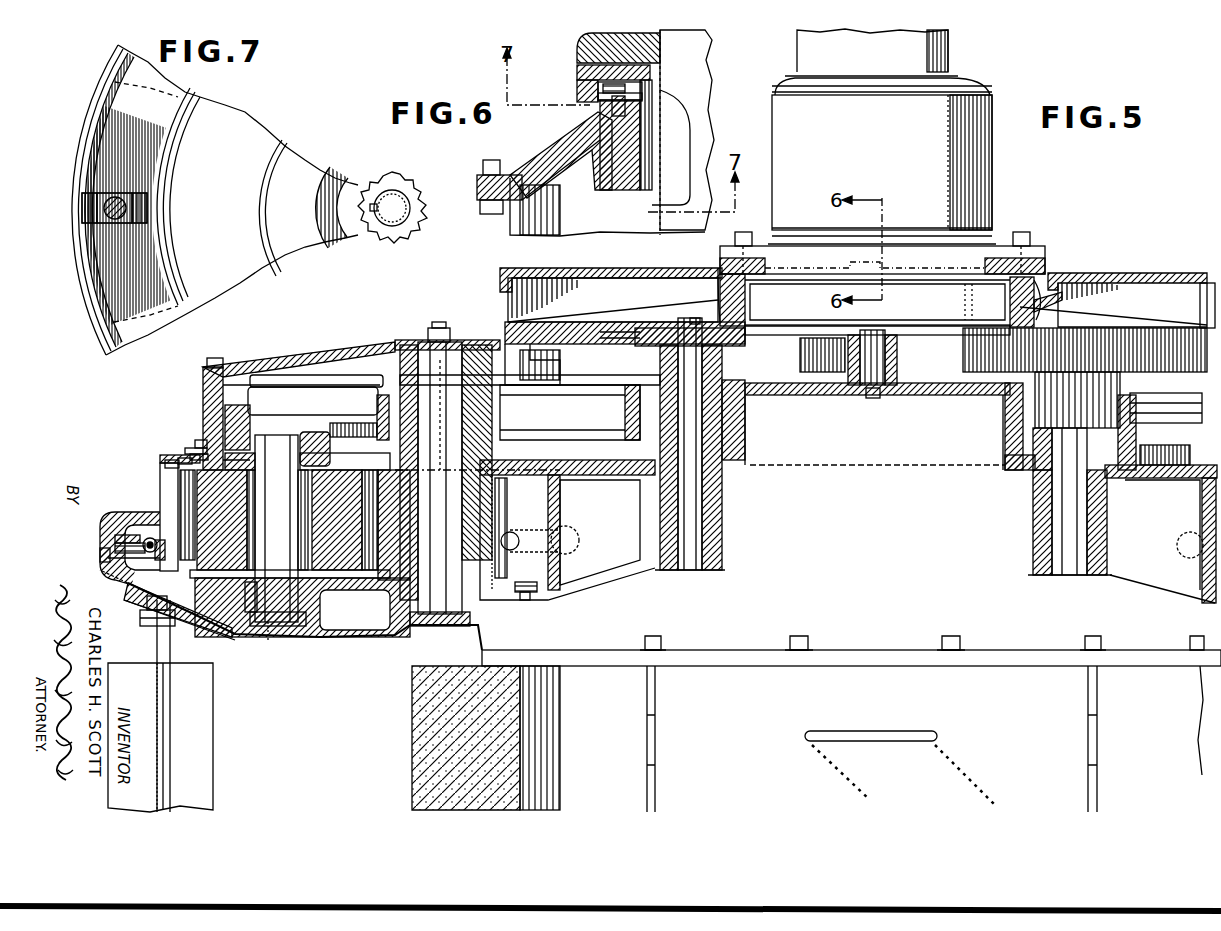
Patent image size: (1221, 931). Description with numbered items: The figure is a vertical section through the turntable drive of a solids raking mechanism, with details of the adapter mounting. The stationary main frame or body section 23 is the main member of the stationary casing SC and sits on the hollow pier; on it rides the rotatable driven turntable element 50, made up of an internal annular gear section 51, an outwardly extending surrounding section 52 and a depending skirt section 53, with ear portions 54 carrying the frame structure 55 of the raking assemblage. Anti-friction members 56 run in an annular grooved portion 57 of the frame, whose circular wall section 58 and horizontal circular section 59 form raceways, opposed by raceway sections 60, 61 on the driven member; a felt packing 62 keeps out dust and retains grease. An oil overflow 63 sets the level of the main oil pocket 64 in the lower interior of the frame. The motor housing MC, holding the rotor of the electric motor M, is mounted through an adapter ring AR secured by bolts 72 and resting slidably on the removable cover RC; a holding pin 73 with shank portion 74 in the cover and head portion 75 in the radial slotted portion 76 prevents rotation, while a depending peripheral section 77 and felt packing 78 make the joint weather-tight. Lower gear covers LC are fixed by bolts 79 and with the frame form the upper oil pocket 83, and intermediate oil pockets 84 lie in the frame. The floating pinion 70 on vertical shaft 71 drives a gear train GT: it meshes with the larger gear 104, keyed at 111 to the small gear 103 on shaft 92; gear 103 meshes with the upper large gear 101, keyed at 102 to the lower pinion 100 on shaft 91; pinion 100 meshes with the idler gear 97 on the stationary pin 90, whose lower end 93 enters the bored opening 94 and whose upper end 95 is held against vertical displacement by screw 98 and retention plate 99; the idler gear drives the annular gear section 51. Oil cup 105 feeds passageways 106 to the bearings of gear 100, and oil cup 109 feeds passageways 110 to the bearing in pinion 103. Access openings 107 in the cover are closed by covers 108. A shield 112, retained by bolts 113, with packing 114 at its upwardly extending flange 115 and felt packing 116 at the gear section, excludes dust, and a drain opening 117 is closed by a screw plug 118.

In FIG. 5, the stationary main frame member or body section 23 is at (315, 630).
In FIG. 5, the rotatable driven turntable element 50 is at (162, 480).
In FIG. 5, the internal annular gear section 51 is at (162, 458).
In FIG. 5, the surrounding section 52 is at (128, 543).
In FIG. 5, the skirt section 53 is at (108, 535).
In FIG. 5, the ear portions 54 is at (140, 620).
In FIG. 5, the frame structure 55 is at (205, 715).
In FIG. 5, the anti-friction members 56 is at (165, 552).
In FIG. 5, the annular grooved or recessed portion 57 is at (108, 558).
In FIG. 5, the circular wall section 58 is at (100, 552).
In FIG. 5, the horizontal circular section 59 is at (125, 578).
In FIG. 5, the raceway section 60 is at (150, 538).
In FIG. 5, the raceway section 61 is at (154, 540).
In FIG. 5, the felt packing 62 is at (125, 535).
In FIG. 5, the oil overflow 63 is at (572, 548).
In FIG. 5, the main oil pocket 64 is at (525, 565).
In FIG. 5, the floating pinion or gear element 70 is at (895, 385).
In FIG. 5, the vertically extending shaft 71 is at (870, 385).
In FIG. 5, the bolts 72 is at (745, 232).
In FIG. 6, the holding pin 73 is at (614, 110).
In FIG. 6, the shank portion 74 is at (565, 170).
In FIG. 7, the head portion 75 is at (128, 205).
In FIG. 6, the head portion 75 is at (605, 98).
In FIG. 7, the radial slotted portion 76 is at (150, 190).
In FIG. 6, the radial slotted portion 76 is at (603, 88).
In FIG. 5, the radial slotted portion 76 is at (885, 262).
In FIG. 7, the depending peripheral section 77 is at (95, 180).
In FIG. 5, the depending peripheral section 77 is at (720, 278).
In FIG. 5, the felt packing 78 is at (1040, 275).
In FIG. 5, the bolts 79 is at (224, 352).
In FIG. 5, the upper oil pocket 83 is at (535, 362).
In FIG. 5, the intermediate oil pockets 84 is at (1150, 440).
In FIG. 5, the idler gear bearing pin or stationary shaft 90 is at (278, 530).
In FIG. 5, the first intermediate gear set bearing pin or shaft 91 is at (440, 484).
In FIG. 5, the second intermediate gear set bearing pin or shaft 92 is at (690, 457).
In FIG. 5, the lower end of pin 90 93 is at (274, 630).
In FIG. 5, the bored opening 94 is at (255, 630).
In FIG. 5, the upper end of pin 90 95 is at (278, 440).
In FIG. 5, the idler gear 97 is at (290, 524).
In FIG. 5, the screw 98 is at (304, 430).
In FIG. 5, the retention plate 99 is at (335, 428).
In FIG. 5, the lower pinion or small gear 100 is at (390, 620).
In FIG. 5, the upper large gear 101 is at (505, 410).
In FIG. 5, the key 102 is at (316, 376).
In FIG. 5, the lower pinion or small gear 103 is at (745, 436).
In FIG. 5, the larger gear 104 is at (730, 336).
In FIG. 5, the oil cup 105 is at (442, 324).
In FIG. 5, the oil passageways 106 is at (440, 400).
In FIG. 5, the access openings 107 is at (857, 302).
In FIG. 5, the covers 108 is at (612, 272).
In FIG. 5, the oil cup 109 is at (695, 318).
In FIG. 5, the oil passageways 110 is at (686, 345).
In FIG. 5, the key 111 is at (640, 345).
In FIG. 5, the shield 112 is at (183, 458).
In FIG. 5, the bolts 113 is at (195, 454).
In FIG. 5, the packing 114 is at (200, 440).
In FIG. 5, the upwardly extending flange portion 115 is at (195, 448).
In FIG. 5, the felt packing 116 is at (170, 462).
In FIG. 5, the oil drain opening 117 is at (518, 594).
In FIG. 5, the screw plug 118 is at (527, 600).
In FIG. 7, the adapter ring AR is at (95, 142).
In FIG. 5, the adapter ring AR is at (1035, 290).
In FIG. 6, the removable cover RC is at (540, 170).
In FIG. 5, the removable cover RC is at (1040, 302).
In FIG. 5, the lower gear cover LC is at (286, 366).
In FIG. 5, the stationary turntable structure or casing SC is at (386, 332).
In FIG. 5, the train of speed reducing and power transmission gearing GT is at (894, 408).
In FIG. 5, the electric motor M is at (882, 62).
In FIG. 5, the motor housing or casing MC is at (882, 169).